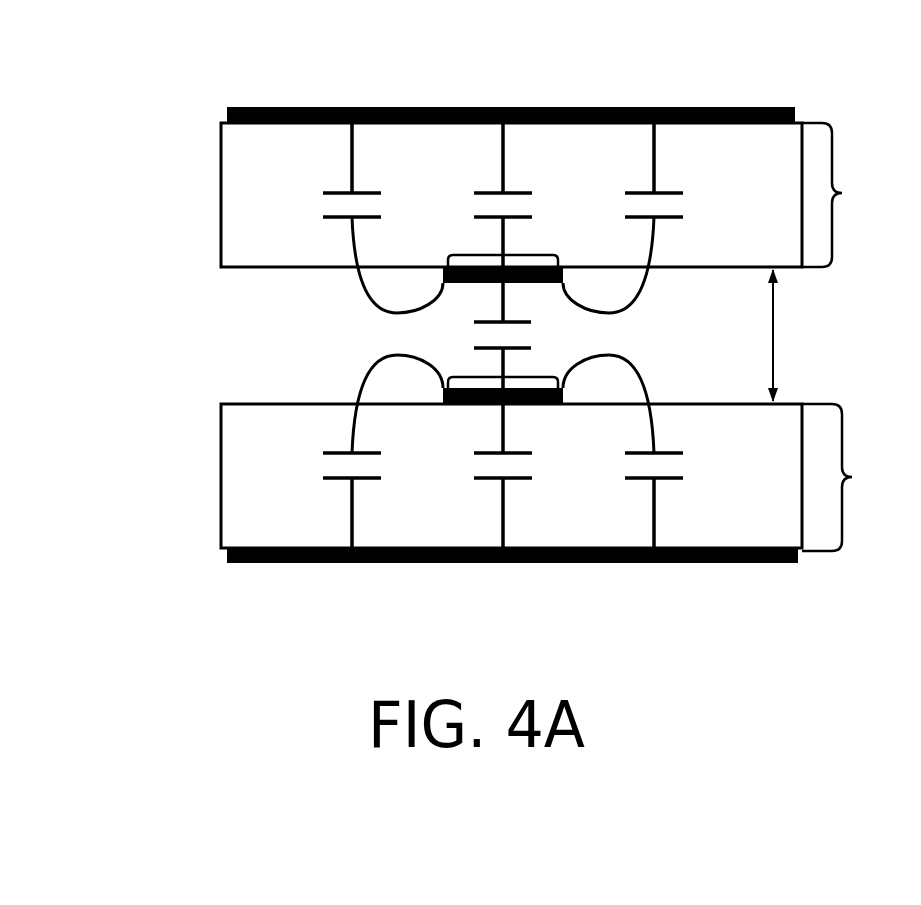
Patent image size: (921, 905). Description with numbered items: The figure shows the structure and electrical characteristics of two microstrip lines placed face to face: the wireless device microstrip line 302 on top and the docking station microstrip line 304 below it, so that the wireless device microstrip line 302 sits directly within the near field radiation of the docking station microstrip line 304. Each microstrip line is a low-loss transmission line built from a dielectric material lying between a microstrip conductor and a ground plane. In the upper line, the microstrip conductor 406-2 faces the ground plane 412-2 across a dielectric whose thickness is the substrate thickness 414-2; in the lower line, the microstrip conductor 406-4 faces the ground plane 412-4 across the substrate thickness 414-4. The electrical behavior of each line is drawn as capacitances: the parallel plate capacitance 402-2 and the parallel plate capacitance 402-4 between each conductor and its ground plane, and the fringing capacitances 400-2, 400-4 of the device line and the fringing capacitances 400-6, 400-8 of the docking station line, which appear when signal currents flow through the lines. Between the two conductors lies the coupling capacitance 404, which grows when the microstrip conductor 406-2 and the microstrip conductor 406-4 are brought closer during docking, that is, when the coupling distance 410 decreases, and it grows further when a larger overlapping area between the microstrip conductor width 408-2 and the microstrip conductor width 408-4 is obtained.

The wireless device microstrip line 302 is at (217, 121).
The docking station microstrip line 304 is at (217, 403).
The fringing capacitance 400-2 is at (351, 218).
The fringing capacitance 400-4 is at (656, 218).
The fringing capacitance 400-6 is at (654, 451).
The fringing capacitance 400-8 is at (349, 451).
The parallel plate capacitance 402-2 is at (534, 195).
The parallel plate capacitance 402-4 is at (534, 476).
The coupling capacitance 404 is at (525, 335).
The microstrip conductor 406-2 is at (471, 290).
The microstrip conductor 406-4 is at (484, 408).
The microstrip conductor width 408-2 is at (496, 242).
The microstrip conductor width 408-4 is at (495, 367).
The coupling distance 410 is at (794, 335).
The ground plane 412-2 is at (747, 104).
The ground plane 412-4 is at (746, 567).
The substrate thickness 414-2 is at (857, 195).
The substrate thickness 414-4 is at (860, 477).